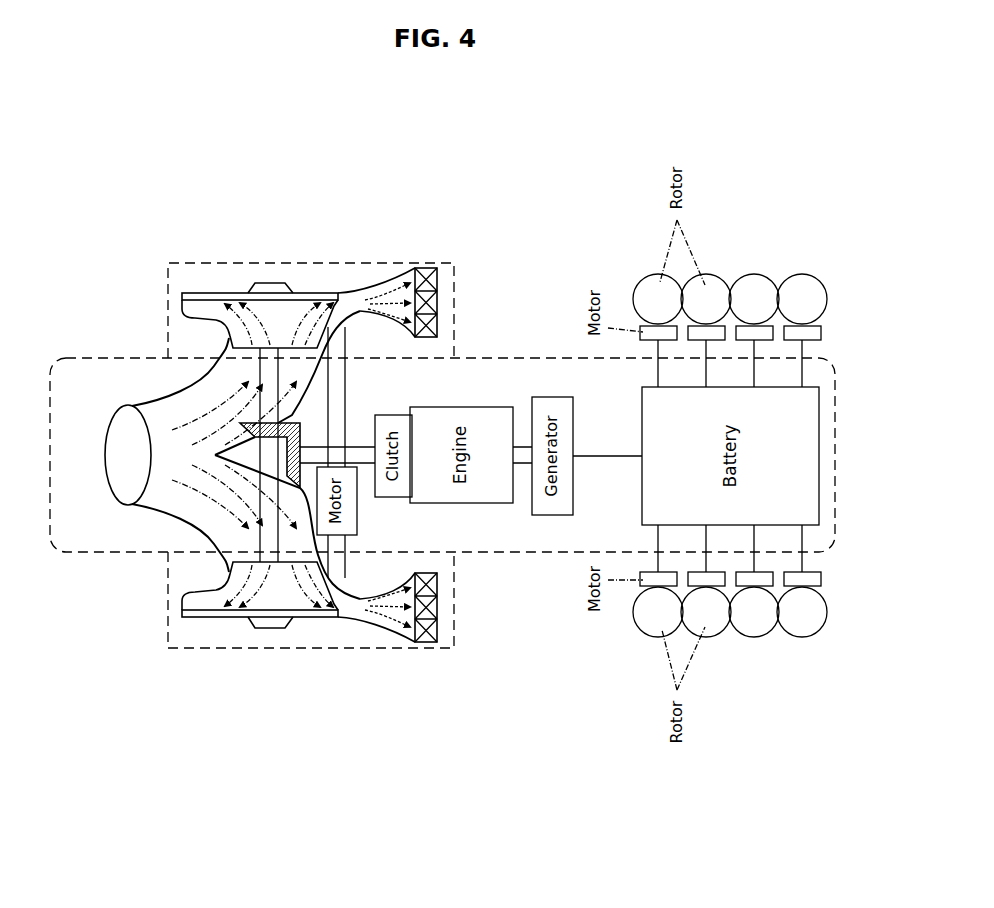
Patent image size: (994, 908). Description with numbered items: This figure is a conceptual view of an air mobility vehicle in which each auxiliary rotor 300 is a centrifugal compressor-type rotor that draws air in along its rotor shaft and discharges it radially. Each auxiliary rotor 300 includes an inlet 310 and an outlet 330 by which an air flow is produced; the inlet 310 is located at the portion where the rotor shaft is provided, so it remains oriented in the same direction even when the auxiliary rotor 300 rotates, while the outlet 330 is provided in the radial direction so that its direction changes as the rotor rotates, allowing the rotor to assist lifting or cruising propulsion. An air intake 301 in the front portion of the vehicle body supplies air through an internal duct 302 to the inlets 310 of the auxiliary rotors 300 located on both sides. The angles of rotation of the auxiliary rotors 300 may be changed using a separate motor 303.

The auxiliary rotor 300 is at (237, 263).
The air intake 301 is at (110, 420).
The internal duct 302 is at (165, 402).
The motor 303 is at (360, 517).
The inlet 310 is at (247, 360).
The outlet 330 is at (440, 302).